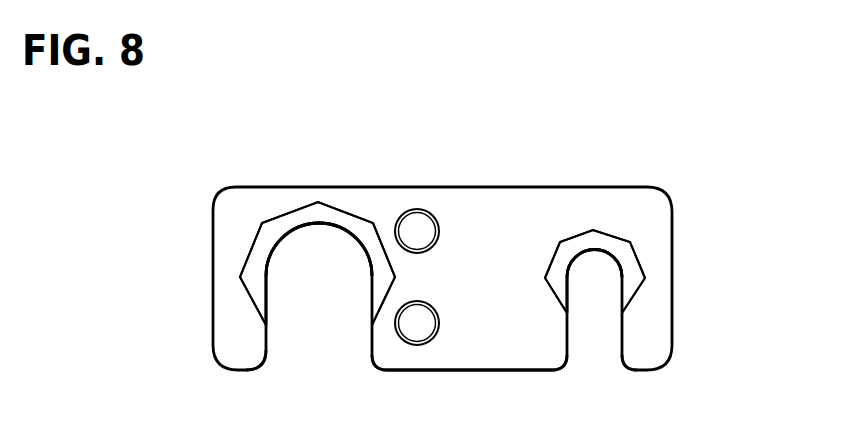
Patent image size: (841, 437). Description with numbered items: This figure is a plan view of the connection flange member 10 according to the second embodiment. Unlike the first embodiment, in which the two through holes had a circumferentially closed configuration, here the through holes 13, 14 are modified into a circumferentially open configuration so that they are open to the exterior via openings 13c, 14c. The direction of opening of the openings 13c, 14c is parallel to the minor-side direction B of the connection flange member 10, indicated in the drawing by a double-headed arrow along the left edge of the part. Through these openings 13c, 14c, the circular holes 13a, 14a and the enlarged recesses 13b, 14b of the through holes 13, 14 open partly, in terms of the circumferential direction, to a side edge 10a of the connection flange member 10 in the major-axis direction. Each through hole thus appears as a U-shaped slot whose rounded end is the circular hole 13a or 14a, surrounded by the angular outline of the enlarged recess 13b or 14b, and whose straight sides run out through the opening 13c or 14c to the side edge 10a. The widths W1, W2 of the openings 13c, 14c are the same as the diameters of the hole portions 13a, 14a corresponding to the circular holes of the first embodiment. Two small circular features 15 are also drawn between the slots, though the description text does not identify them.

The connection flange member 10 is at (505, 186).
The side edge 10a is at (490, 371).
The through hole 13 is at (395, 134).
The circular hole 13a is at (304, 275).
The enlarged recess 13b is at (355, 223).
The opening 13c is at (314, 353).
The through hole 14 is at (680, 134).
The circular hole 14a is at (585, 275).
The enlarged recess 14b is at (613, 245).
The opening 14c is at (593, 353).
The mounting holes 15 is at (417, 231).
The minor-side direction B is at (184, 208).
The width of opening W1 is at (370, 343).
The width of opening W2 is at (620, 343).